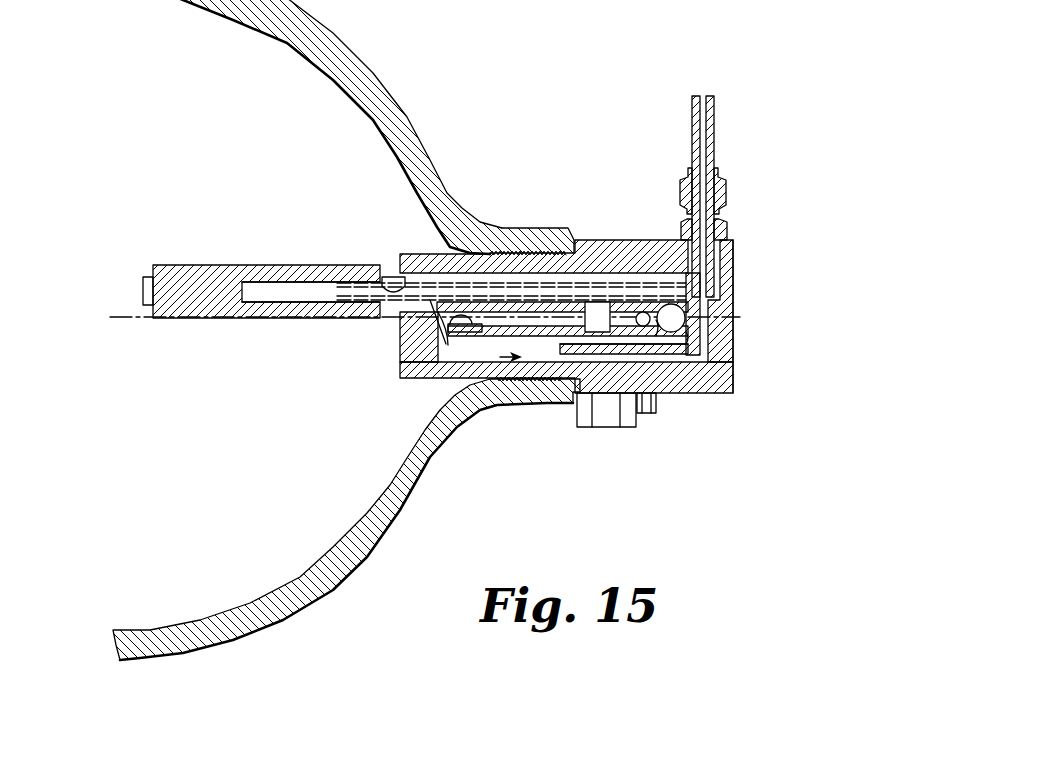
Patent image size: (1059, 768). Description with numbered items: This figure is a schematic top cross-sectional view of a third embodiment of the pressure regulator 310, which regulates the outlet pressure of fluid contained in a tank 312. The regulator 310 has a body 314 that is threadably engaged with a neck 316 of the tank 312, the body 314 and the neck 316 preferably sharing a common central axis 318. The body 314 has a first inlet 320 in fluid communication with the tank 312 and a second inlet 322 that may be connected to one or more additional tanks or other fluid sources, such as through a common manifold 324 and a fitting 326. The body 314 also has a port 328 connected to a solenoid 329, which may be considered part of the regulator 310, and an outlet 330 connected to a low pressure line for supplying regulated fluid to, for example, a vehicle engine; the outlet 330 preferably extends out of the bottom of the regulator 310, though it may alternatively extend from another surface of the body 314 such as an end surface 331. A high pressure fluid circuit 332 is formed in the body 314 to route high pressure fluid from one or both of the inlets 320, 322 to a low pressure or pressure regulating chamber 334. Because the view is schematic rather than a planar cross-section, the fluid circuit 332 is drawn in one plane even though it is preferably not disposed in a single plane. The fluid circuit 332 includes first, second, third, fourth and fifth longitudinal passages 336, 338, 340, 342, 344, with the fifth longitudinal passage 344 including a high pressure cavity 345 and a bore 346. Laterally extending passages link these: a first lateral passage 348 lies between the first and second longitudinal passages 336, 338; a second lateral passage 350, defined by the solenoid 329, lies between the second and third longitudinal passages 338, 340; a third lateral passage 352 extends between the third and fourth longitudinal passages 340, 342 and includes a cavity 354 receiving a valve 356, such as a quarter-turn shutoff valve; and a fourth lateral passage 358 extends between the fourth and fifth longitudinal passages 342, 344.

The regulator 310 is at (810, 285).
The tank 312 is at (388, 97).
The body 314 is at (445, 400).
The neck 316 is at (508, 227).
The central axis 318 is at (128, 317).
The first inlet 320 is at (398, 356).
The second inlet 322 is at (728, 229).
The common manifold 324 is at (716, 130).
The fitting 326 is at (727, 199).
The port 328 is at (383, 272).
The solenoid 329 is at (178, 263).
The outlet 330 is at (690, 380).
The end surface 331 is at (735, 270).
The high pressure fluid circuit 332 is at (498, 405).
The pressure regulating chamber 334 is at (608, 302).
The first longitudinal passage 336 is at (600, 372).
The second longitudinal passage 338 is at (637, 274).
The third longitudinal passage 340 is at (438, 328).
The fourth longitudinal passage 342 is at (590, 400).
The fifth longitudinal passage 344 is at (524, 318).
The high pressure cavity 345 is at (500, 358).
The bore 346 is at (578, 335).
The first lateral passage 348 is at (662, 340).
The second lateral passage 350 is at (303, 297).
The third lateral passage 352 is at (690, 312).
The cavity 354 is at (665, 350).
The valve 356 is at (668, 326).
The fourth lateral passage 358 is at (452, 335).